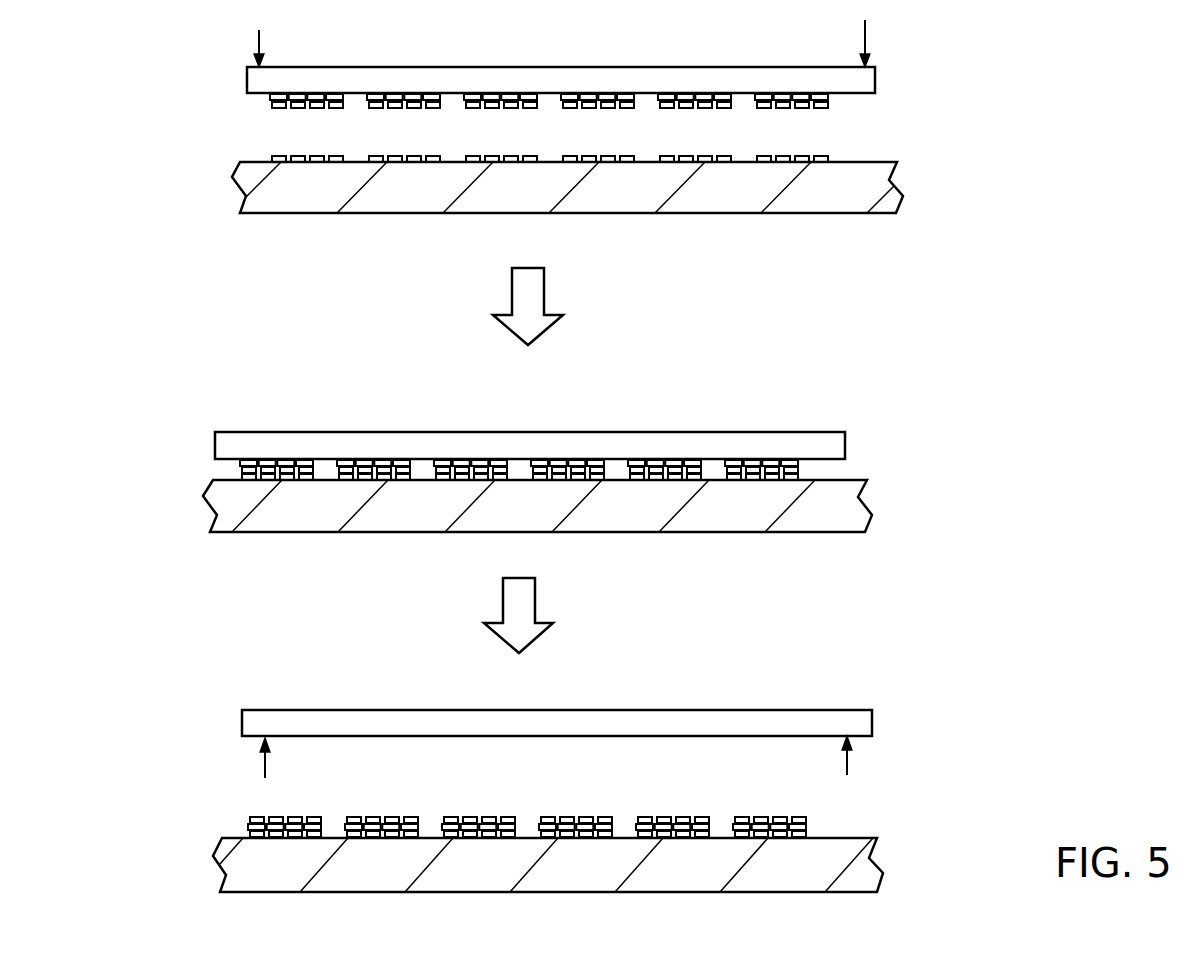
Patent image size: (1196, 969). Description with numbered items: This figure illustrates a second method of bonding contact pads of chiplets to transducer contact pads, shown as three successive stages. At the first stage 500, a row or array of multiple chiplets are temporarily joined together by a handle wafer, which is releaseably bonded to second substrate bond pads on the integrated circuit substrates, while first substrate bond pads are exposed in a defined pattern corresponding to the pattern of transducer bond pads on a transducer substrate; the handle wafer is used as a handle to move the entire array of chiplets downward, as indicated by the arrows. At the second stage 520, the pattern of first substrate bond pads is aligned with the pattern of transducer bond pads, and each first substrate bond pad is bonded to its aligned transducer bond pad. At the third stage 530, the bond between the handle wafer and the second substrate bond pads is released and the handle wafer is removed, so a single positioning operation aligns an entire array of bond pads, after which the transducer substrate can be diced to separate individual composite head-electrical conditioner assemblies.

The handle wafer joining stage 500 is at (936, 78).
The alignment and bonding stage 520 is at (943, 460).
The handle wafer release stage 530 is at (958, 714).